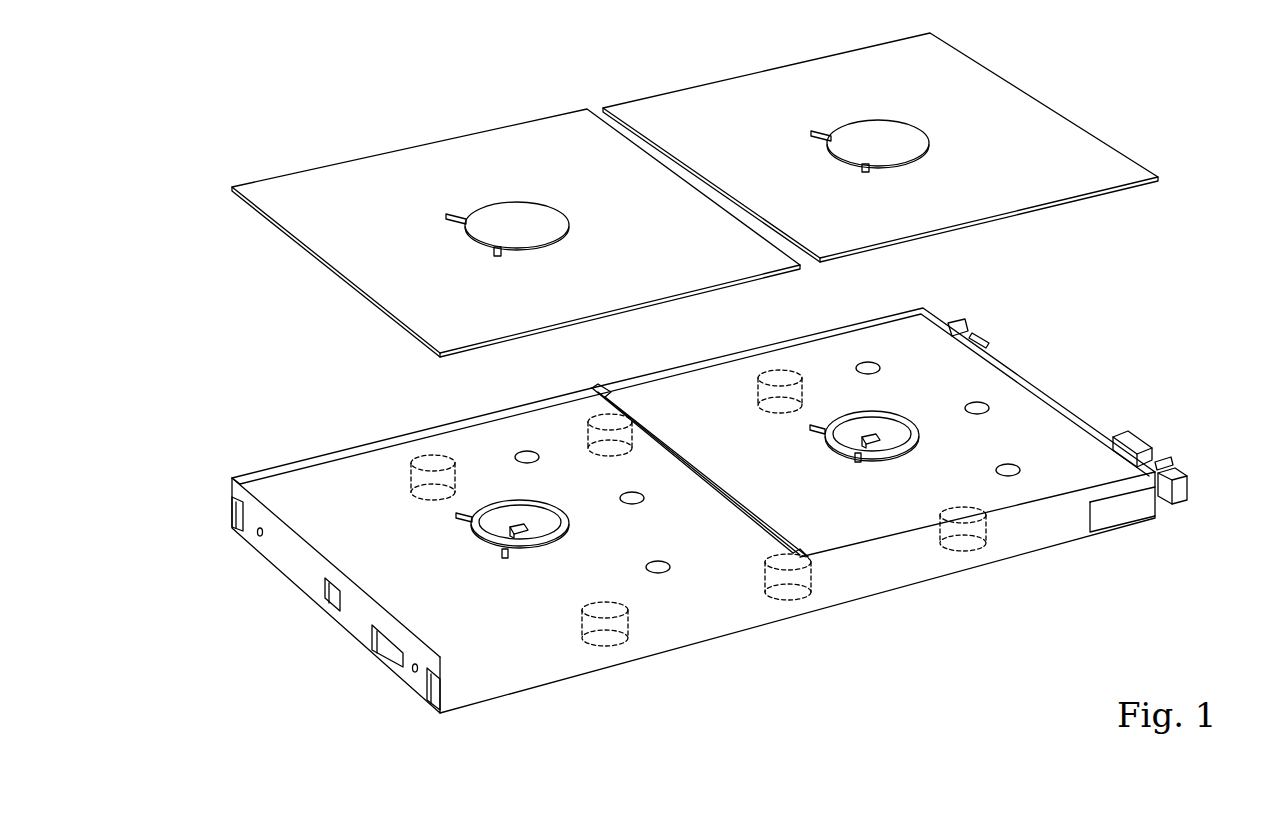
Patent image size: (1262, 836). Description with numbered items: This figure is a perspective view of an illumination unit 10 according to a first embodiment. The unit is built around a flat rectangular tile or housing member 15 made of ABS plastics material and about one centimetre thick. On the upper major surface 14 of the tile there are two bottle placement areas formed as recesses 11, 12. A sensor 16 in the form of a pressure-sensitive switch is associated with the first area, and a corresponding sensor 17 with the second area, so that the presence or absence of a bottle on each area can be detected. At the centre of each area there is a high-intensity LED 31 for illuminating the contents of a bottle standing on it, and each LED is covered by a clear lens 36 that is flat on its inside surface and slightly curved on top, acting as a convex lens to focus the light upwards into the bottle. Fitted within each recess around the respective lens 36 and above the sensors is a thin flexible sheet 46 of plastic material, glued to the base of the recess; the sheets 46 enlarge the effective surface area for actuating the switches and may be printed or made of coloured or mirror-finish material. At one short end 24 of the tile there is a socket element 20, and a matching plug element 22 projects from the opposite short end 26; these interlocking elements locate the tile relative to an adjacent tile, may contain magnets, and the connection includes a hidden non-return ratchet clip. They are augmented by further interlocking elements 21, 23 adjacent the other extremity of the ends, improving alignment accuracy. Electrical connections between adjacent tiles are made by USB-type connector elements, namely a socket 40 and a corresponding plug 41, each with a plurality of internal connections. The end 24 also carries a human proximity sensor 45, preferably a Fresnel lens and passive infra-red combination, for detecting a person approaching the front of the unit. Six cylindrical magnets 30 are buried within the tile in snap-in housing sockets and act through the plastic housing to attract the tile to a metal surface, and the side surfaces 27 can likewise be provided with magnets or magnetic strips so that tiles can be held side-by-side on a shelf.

The illumination unit 10 is at (668, 534).
The recess 11 is at (518, 605).
The recess 12 is at (857, 507).
The upper major surface 14 is at (629, 498).
The housing member 15 is at (985, 383).
The sensor 16 is at (523, 452).
The sensor 17 is at (865, 363).
The socket element 20 is at (231, 513).
The interlocking element 21 is at (253, 543).
The plug element 22 is at (968, 318).
The interlocking element 23 is at (993, 332).
The end 24 is at (297, 570).
The end 26 is at (1043, 387).
The side surface 27 is at (852, 590).
The magnet 30 is at (430, 460).
The LED 31 is at (504, 533).
The lens 36 is at (550, 546).
The socket 40 is at (390, 647).
The plug 41 is at (1144, 437).
The human proximity sensor 45 is at (337, 598).
The flexible sheet 46 is at (437, 166).